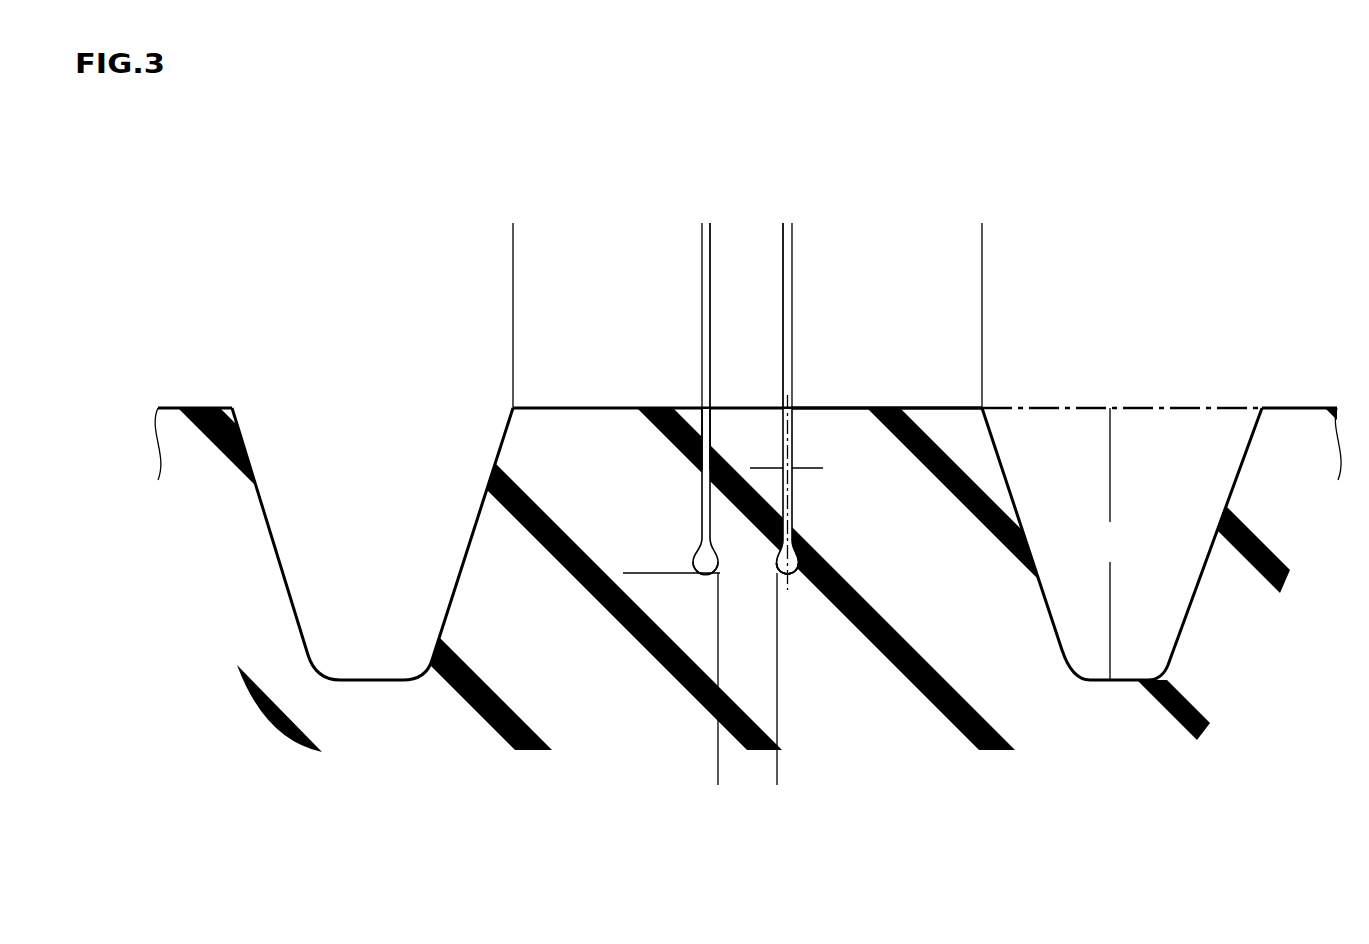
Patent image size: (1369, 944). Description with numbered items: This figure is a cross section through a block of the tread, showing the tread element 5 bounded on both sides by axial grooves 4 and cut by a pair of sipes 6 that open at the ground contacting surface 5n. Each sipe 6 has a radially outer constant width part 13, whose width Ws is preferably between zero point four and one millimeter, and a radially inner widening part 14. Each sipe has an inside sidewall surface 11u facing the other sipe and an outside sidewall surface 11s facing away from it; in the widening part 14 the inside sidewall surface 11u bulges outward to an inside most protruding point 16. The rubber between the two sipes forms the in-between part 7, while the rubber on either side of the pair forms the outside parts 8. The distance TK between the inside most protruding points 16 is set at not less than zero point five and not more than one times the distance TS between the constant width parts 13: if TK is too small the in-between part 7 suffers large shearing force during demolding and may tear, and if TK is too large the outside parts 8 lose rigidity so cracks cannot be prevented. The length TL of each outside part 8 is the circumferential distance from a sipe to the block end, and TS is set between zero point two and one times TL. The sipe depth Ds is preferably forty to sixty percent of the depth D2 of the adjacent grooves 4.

The axial grooves 4 is at (340, 515).
The tread element 5 is at (942, 404).
The ground contact surface of land portion 5n is at (848, 408).
The sipes 6 is at (880, 633).
The in-between part 7 is at (738, 452).
The outside parts 8 is at (546, 470).
The outside sidewall surface 11s is at (700, 478).
The inside sidewall surface 11u is at (712, 432).
The constant width part 13 is at (790, 480).
The widening part 14 is at (800, 567).
The inside most protruding point 16 is at (718, 575).
The tire circumferential length of the outside part TL is at (513, 229).
The distance between constant width parts TS is at (710, 229).
The distance between inside most protruding points TK is at (718, 780).
The width of the constant width part Ws is at (793, 453).
The depth of the sipes Ds is at (623, 408).
The depth of the adjacent grooves D2 is at (1110, 544).